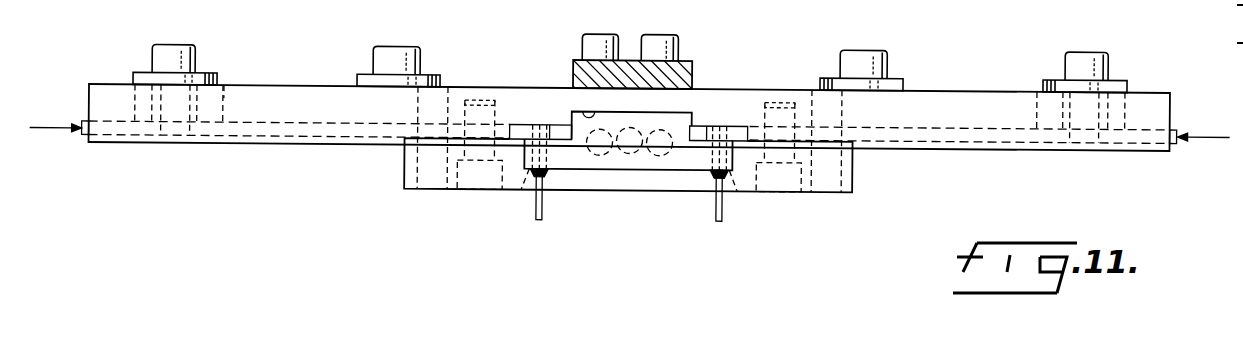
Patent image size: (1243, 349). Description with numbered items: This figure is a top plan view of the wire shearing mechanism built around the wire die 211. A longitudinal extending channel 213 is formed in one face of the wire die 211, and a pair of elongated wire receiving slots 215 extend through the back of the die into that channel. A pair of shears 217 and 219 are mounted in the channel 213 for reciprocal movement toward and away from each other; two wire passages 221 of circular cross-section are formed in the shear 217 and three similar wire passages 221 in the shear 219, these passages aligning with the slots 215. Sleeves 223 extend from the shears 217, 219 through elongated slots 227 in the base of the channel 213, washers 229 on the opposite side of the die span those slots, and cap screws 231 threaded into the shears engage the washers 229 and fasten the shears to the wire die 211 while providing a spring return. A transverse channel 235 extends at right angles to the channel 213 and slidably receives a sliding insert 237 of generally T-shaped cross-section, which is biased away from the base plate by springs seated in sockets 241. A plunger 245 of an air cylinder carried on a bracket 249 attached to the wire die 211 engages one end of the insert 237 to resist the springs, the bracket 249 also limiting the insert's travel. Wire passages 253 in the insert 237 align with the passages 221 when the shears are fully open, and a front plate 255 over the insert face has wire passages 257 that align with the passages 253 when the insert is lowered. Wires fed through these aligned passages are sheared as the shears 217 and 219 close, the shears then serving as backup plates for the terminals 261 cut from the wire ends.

The wire die 211 is at (1014, 58).
The longitudinal extending channel 213 is at (1148, 120).
The elongated wire receiving slots 215 is at (528, 97).
The shear 217 is at (82, 136).
The shear 219 is at (1177, 136).
The wire passages 221 is at (718, 200).
The sleeves 223 is at (197, 100).
The elongated slots 227 is at (224, 84).
The washers 229 is at (143, 72).
The cap screws 231 is at (192, 44).
The transverse channel 235 is at (587, 108).
The sliding insert 237 is at (616, 148).
The sockets 241 is at (660, 151).
The plunger 245 is at (630, 149).
The bracket 249 is at (628, 56).
The wire passages 253 is at (545, 176).
The front plate 255 is at (853, 163).
The wire passages 257 is at (533, 165).
The terminals 261 is at (540, 216).